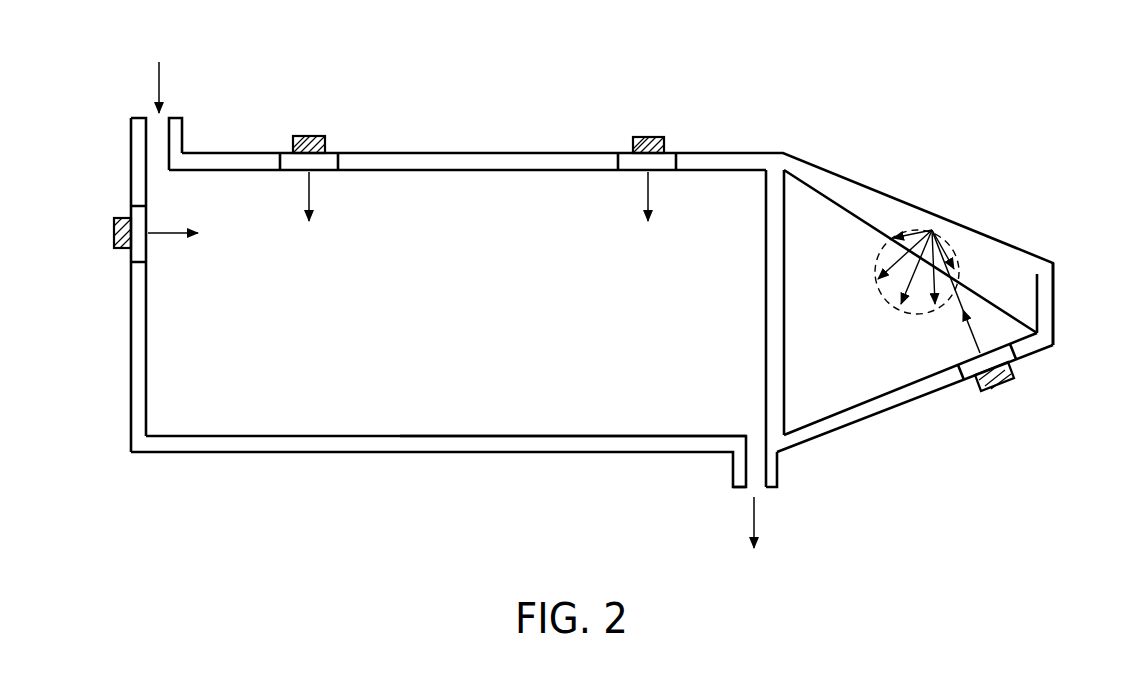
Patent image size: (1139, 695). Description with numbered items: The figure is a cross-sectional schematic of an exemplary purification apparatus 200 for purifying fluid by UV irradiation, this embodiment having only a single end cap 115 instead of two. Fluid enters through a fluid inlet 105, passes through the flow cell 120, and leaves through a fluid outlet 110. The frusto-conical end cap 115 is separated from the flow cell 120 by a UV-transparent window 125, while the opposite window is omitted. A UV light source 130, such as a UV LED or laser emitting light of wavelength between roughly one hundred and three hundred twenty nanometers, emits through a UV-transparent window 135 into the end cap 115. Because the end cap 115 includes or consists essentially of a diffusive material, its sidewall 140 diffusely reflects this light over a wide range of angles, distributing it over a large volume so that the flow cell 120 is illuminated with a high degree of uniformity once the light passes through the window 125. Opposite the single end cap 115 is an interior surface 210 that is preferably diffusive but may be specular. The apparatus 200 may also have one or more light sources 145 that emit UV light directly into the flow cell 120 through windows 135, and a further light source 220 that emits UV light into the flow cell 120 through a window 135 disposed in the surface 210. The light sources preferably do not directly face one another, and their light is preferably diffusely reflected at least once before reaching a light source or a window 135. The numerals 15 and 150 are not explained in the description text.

The purification apparatus 200 is at (892, 61).
The fluid inlet 105 is at (185, 97).
The fluid outlet 110 is at (726, 505).
The end cap 115 is at (892, 403).
The flow cell 120 is at (270, 395).
The UV-transparent window 125 is at (780, 403).
The UV light source 130 is at (995, 393).
The UV-transparent window 135 is at (128, 212).
The sidewall 140 is at (838, 197).
The light source 145 is at (324, 135).
The bottom wall portion 150 is at (501, 428).
The end wall 15 is at (1033, 314).
The interior surface 210 is at (153, 325).
The light source 220 is at (112, 231).